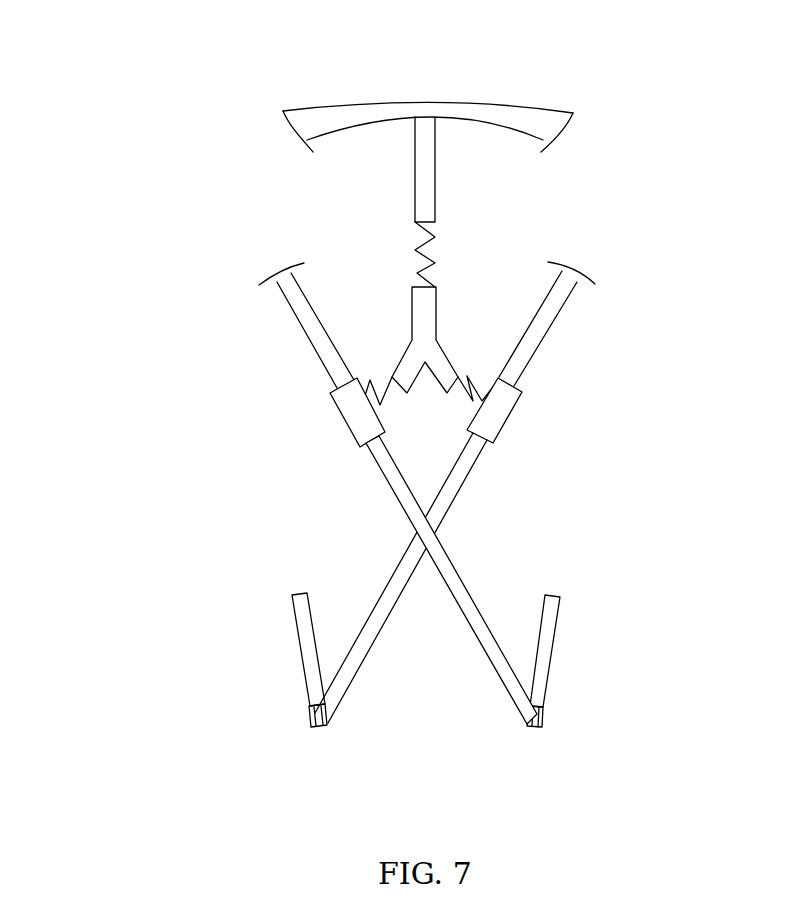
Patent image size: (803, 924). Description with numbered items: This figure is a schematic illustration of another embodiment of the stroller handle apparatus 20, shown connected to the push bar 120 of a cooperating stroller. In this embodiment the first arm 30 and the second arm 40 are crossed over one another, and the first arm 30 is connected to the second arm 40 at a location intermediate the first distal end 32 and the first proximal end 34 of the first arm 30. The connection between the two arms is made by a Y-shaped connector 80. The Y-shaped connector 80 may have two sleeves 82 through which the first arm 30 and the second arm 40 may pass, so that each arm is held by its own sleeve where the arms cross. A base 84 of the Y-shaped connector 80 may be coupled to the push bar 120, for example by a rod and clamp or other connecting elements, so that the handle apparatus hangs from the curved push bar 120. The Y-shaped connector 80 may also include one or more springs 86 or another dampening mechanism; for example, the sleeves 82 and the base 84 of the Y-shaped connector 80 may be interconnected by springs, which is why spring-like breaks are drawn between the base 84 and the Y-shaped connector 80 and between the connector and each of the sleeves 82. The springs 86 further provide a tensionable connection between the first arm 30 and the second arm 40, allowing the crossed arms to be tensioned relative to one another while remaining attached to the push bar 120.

The stroller handle apparatus 20 is at (145, 95).
The push bar 120 is at (482, 108).
The base 84 is at (437, 198).
The springs 86 is at (432, 257).
The Y-shaped connector 80 is at (440, 317).
The sleeves 82 is at (347, 418).
The first distal end 32 is at (213, 257).
The first arm 30 is at (205, 422).
The second arm 40 is at (560, 481).
The first proximal end 34 is at (590, 742).